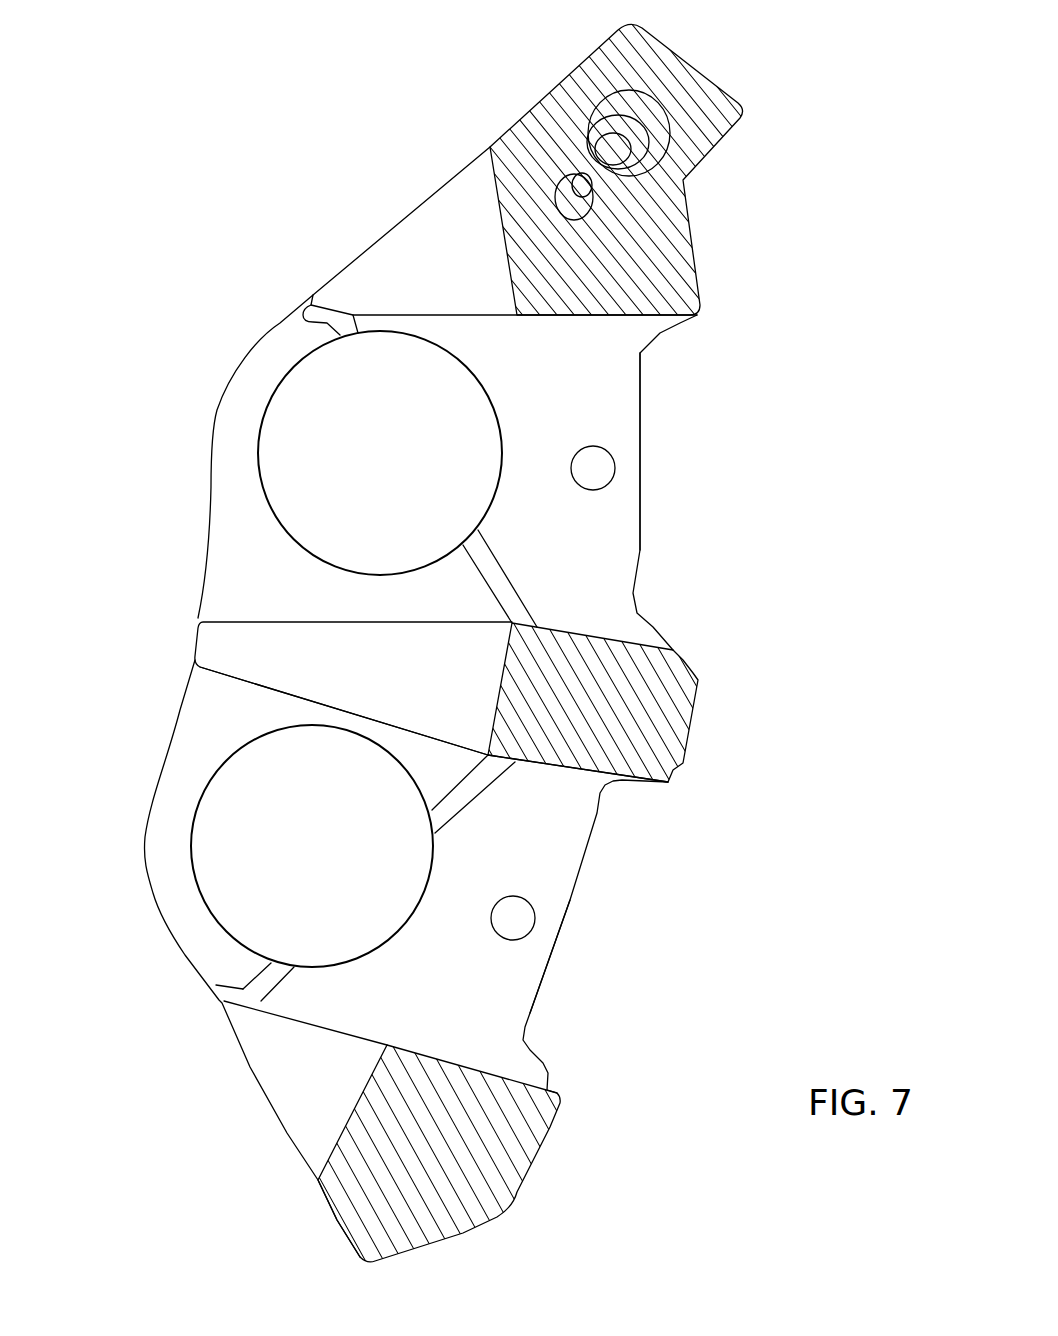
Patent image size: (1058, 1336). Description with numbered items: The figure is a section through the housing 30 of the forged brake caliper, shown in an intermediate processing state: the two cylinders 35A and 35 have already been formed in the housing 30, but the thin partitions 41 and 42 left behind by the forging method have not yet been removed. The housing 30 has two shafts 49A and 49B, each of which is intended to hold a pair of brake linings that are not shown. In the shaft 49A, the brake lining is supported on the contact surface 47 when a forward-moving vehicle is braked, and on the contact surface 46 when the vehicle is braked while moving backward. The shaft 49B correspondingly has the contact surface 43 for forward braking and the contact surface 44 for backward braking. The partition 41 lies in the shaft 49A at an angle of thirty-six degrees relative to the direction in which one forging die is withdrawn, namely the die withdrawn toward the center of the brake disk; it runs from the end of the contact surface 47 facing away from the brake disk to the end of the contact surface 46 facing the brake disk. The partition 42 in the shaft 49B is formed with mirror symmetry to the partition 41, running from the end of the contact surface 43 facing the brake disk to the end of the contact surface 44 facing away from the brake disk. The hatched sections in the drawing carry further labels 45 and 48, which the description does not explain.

The housing 30 is at (630, 42).
The contact surface 43 is at (473, 317).
The cylinder 35A is at (380, 456).
The shaft 49B is at (620, 510).
The partition 42 is at (483, 548).
The contact surface 44 is at (293, 620).
The contact surface 47 is at (263, 684).
The middle hatched section 45 is at (613, 638).
The lower edge of middle section 48 is at (552, 765).
The partition 41 is at (465, 797).
The cylinder 35 is at (311, 852).
The shaft 49A is at (493, 976).
The contact surface 46 is at (363, 1032).